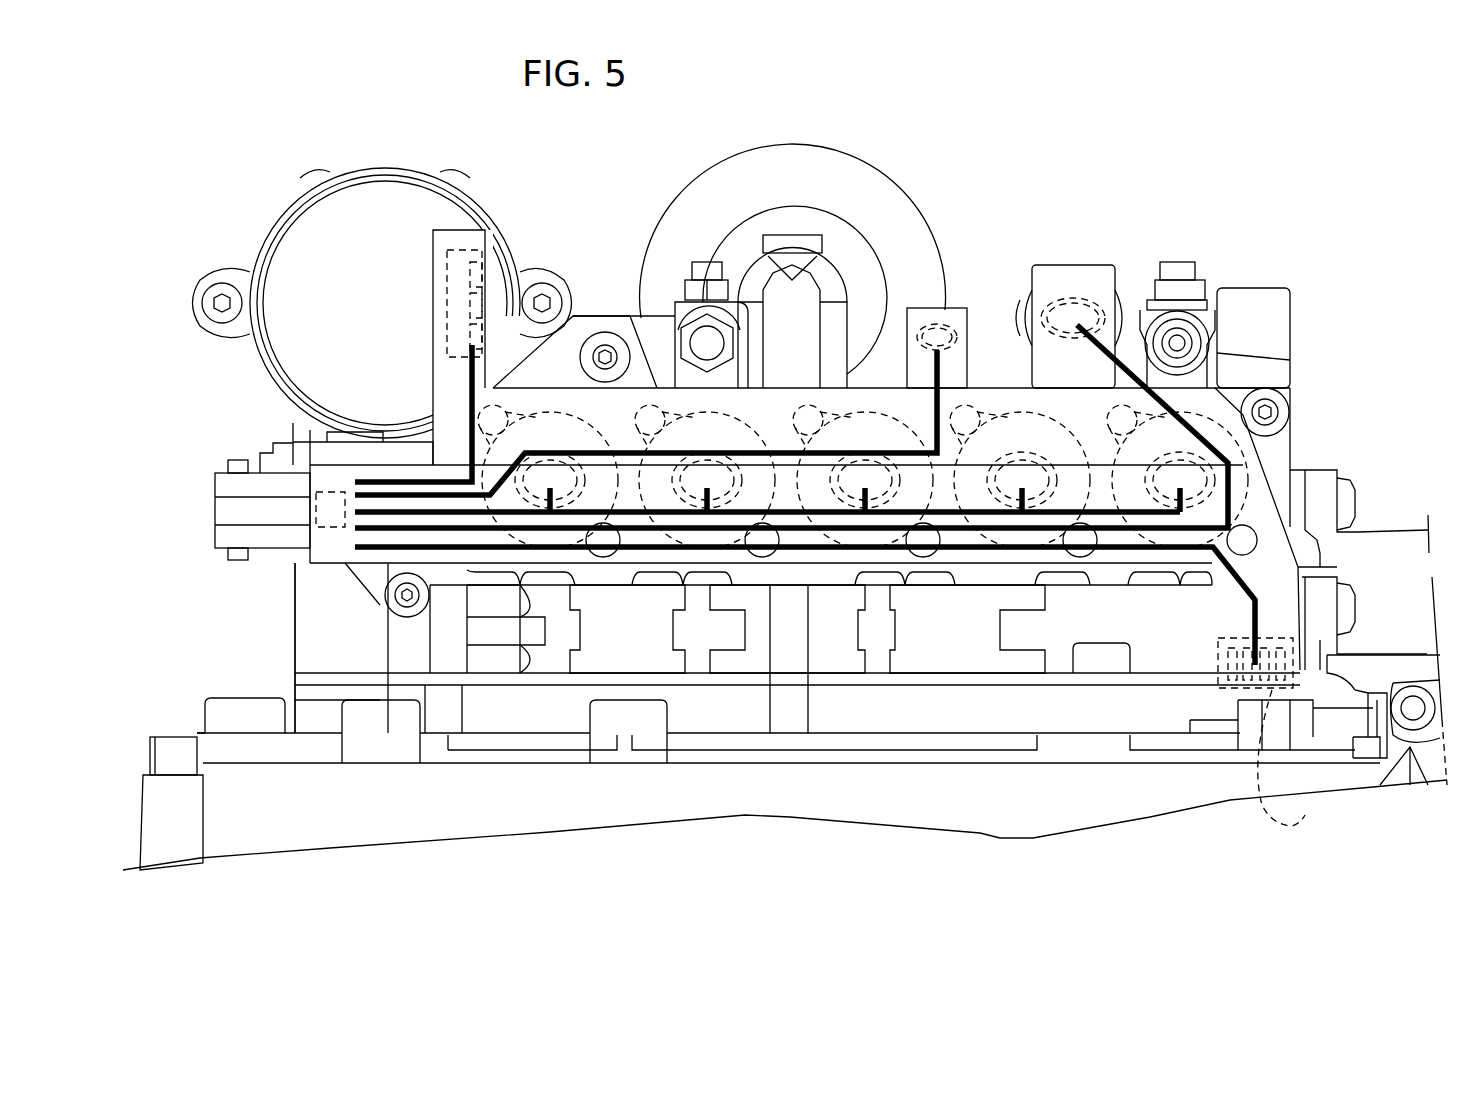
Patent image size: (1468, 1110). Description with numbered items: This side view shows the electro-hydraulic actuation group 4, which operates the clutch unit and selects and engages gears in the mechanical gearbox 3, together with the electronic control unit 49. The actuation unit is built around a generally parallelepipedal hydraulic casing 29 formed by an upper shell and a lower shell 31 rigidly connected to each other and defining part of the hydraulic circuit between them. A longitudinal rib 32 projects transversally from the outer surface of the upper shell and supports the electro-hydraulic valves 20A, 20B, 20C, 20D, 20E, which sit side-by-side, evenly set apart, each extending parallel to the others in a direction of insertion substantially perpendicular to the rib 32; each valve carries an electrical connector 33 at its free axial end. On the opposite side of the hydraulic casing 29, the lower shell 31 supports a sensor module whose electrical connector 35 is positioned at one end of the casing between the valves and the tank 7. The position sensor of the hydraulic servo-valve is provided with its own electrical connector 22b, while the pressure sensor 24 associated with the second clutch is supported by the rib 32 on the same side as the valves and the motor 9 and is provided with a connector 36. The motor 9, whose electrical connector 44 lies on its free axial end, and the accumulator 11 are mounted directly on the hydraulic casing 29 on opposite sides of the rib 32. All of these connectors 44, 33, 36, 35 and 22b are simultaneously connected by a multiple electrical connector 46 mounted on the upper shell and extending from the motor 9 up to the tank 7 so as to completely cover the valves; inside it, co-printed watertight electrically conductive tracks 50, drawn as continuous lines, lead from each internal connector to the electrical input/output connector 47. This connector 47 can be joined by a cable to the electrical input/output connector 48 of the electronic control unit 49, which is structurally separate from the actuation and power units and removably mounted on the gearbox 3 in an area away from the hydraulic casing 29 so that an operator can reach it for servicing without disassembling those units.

The mechanical gearbox 3 is at (1362, 775).
The electro-hydraulic actuation group 4 is at (1163, 197).
The tank 7 is at (1392, 553).
The motor 9 is at (330, 218).
The accumulator 11 is at (840, 180).
The electro-hydraulic valve 20A is at (1030, 420).
The electro-hydraulic valve 20B is at (830, 412).
The electro-hydraulic valve 20C is at (560, 425).
The electro-hydraulic valve 20D is at (1285, 398).
The electro-hydraulic valve 20E is at (700, 392).
The electrical connector 22b is at (938, 322).
The pressure sensor 24 is at (1020, 318).
The hydraulic casing 29 is at (268, 580).
The lower shell 31 is at (312, 708).
The longitudinal rib 32 is at (627, 318).
The electrical connector 33 is at (583, 622).
The electrical connector 35 is at (1289, 761).
The connector 36 is at (1062, 275).
The electrical connector 44 is at (495, 235).
The multiple electrical connector 46 is at (353, 588).
The electrical input/output connector 47 is at (225, 505).
The electrical input/output connector 48 is at (155, 748).
The electronic control unit 49 is at (160, 795).
The electrically conductive track 50 is at (293, 428).